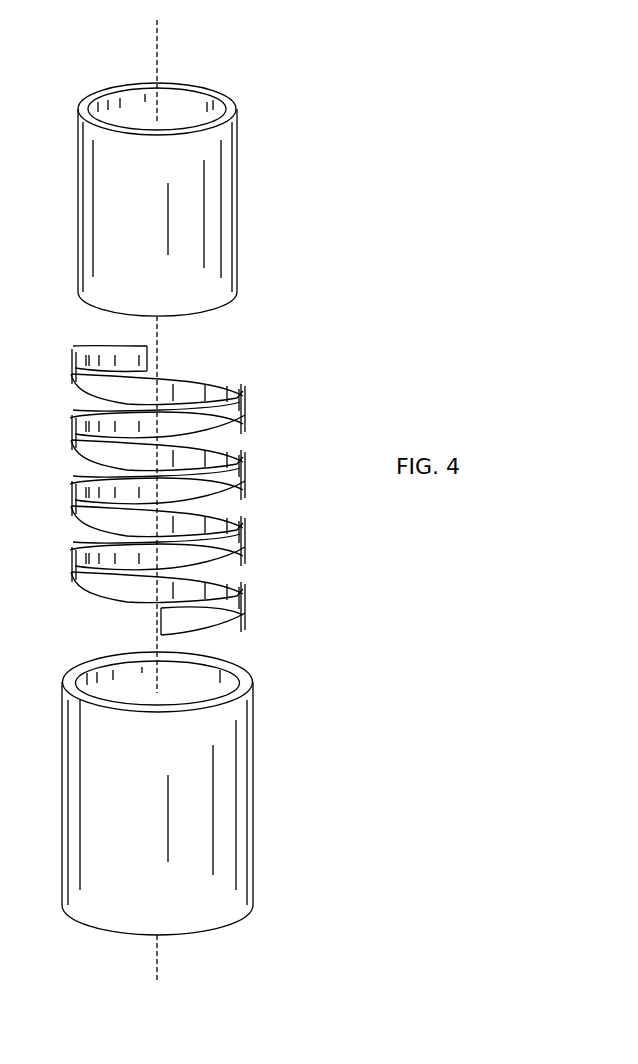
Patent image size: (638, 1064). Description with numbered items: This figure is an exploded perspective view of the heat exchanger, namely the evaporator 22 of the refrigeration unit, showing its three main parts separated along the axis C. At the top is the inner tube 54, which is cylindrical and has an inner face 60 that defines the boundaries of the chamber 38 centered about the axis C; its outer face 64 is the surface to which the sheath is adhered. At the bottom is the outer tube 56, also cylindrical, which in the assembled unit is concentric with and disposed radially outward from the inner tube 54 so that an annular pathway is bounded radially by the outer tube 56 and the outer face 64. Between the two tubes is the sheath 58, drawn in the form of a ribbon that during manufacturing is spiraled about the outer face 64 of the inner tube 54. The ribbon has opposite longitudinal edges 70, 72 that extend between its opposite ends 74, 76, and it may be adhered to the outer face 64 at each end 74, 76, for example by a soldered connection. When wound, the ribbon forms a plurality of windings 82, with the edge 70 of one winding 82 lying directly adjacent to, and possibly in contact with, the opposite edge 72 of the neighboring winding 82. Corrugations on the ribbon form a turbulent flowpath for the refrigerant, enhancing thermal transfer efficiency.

The evaporator 22 is at (357, 61).
The axis C is at (158, 61).
The chamber 38 is at (132, 102).
The inner tube 54 is at (189, 177).
The outer tube 56 is at (270, 808).
The sheath 58 is at (188, 483).
The inner face 60 is at (186, 114).
The outer face 64 is at (228, 254).
The longitudinal edge 70 is at (200, 381).
The longitudinal edge 72 is at (103, 404).
The end of the ribbon 74 is at (123, 346).
The end of the ribbon 76 is at (183, 631).
The winding 82 is at (249, 470).